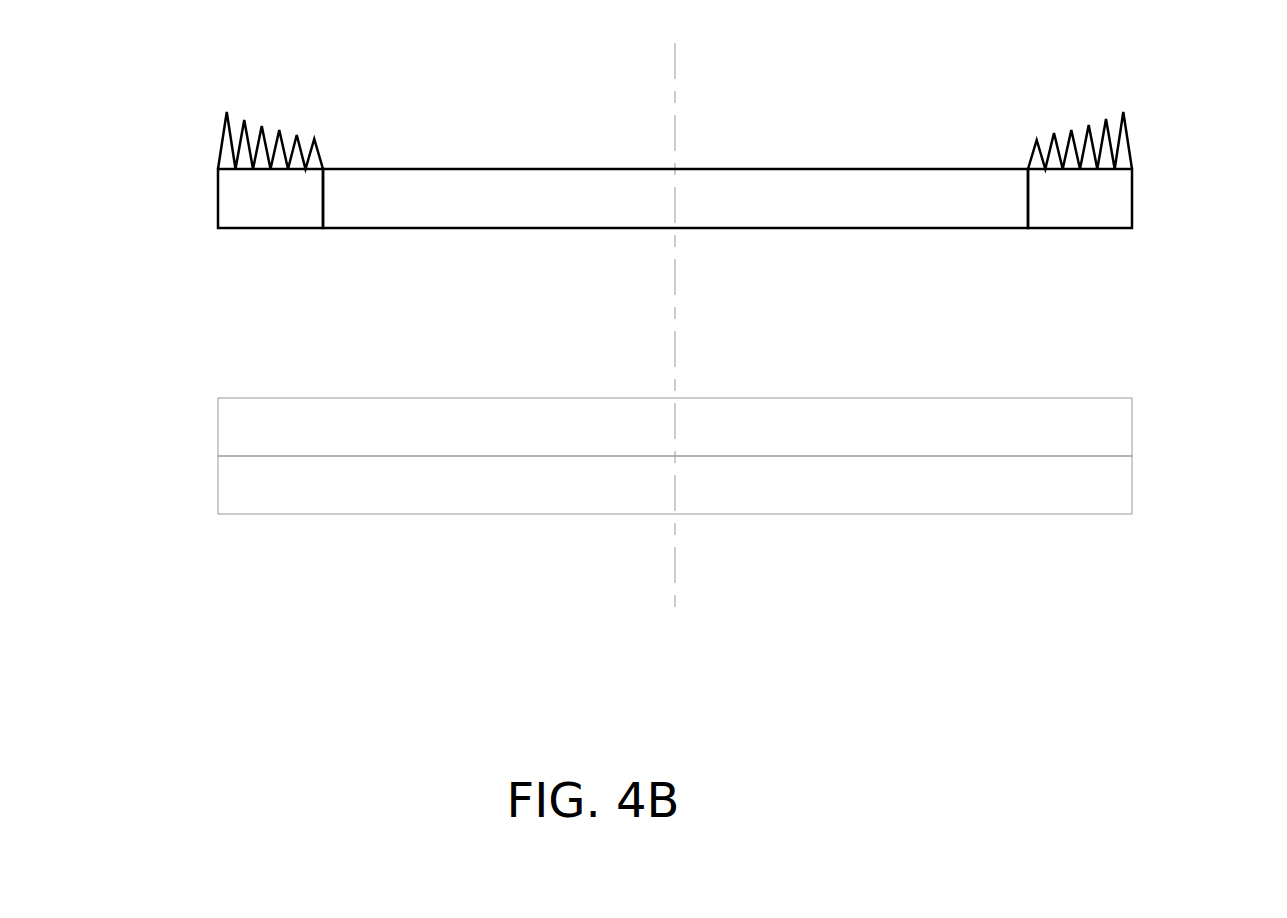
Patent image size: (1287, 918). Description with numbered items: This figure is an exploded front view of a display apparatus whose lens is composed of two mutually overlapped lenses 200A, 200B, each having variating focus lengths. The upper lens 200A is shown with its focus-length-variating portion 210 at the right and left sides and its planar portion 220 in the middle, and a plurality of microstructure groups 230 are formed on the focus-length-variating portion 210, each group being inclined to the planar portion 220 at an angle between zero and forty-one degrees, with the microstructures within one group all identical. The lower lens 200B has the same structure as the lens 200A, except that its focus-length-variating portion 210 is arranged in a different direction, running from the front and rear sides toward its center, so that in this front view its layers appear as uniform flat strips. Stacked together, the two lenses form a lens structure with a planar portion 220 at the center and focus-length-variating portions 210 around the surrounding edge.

The lens 200A is at (595, 173).
The lens 200B is at (666, 453).
The focus-length-variating portion 210 is at (256, 213).
The planar portion 220 is at (581, 213).
The microstructure groups 230 is at (222, 152).